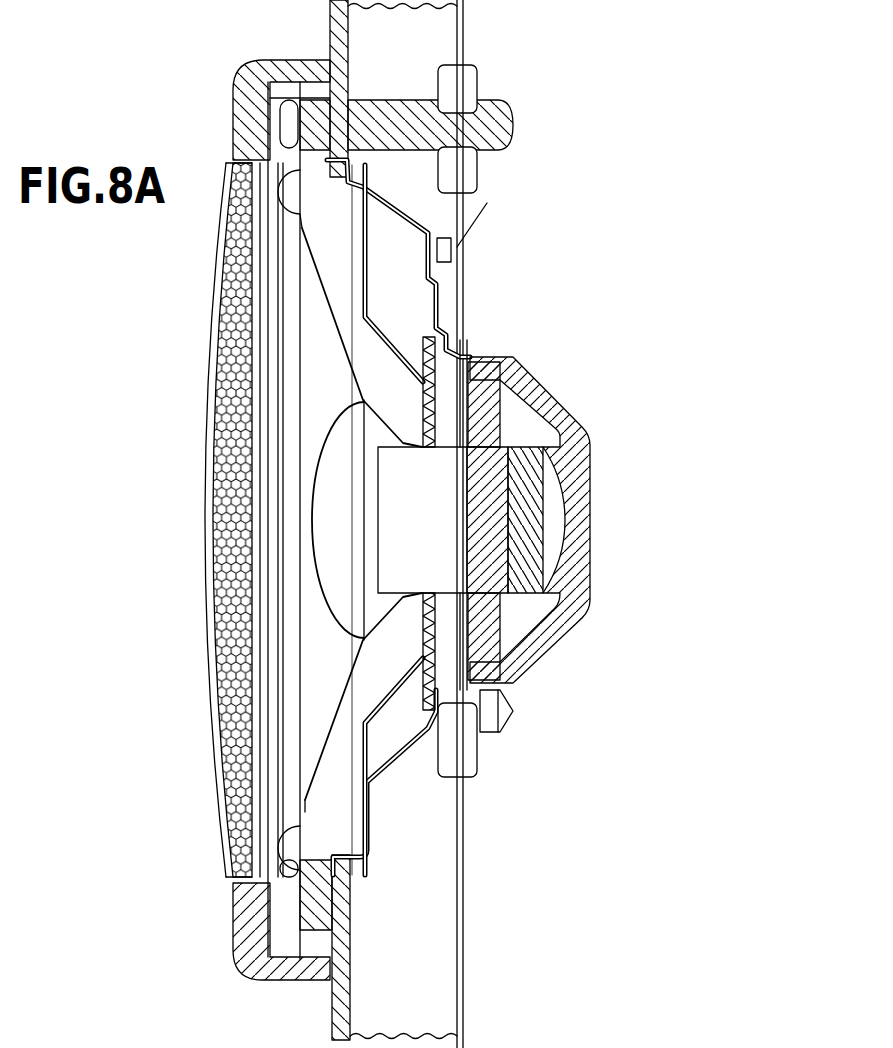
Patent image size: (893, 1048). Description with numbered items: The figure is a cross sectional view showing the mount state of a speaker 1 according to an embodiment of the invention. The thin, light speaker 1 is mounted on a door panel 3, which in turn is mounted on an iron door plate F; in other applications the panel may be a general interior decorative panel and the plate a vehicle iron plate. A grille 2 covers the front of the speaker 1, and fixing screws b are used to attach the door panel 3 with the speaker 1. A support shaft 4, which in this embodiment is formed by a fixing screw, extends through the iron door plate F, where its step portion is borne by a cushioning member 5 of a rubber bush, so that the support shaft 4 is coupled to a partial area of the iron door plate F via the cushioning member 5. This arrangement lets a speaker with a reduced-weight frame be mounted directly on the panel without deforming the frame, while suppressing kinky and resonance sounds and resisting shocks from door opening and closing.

The speaker 1 is at (372, 300).
The grille 2 is at (277, 437).
The door panel 3 is at (330, 28).
The support shaft 4 is at (428, 112).
The cushioning member 5 is at (470, 83).
The fixing screw b is at (250, 107).
The iron door plate F is at (463, 937).